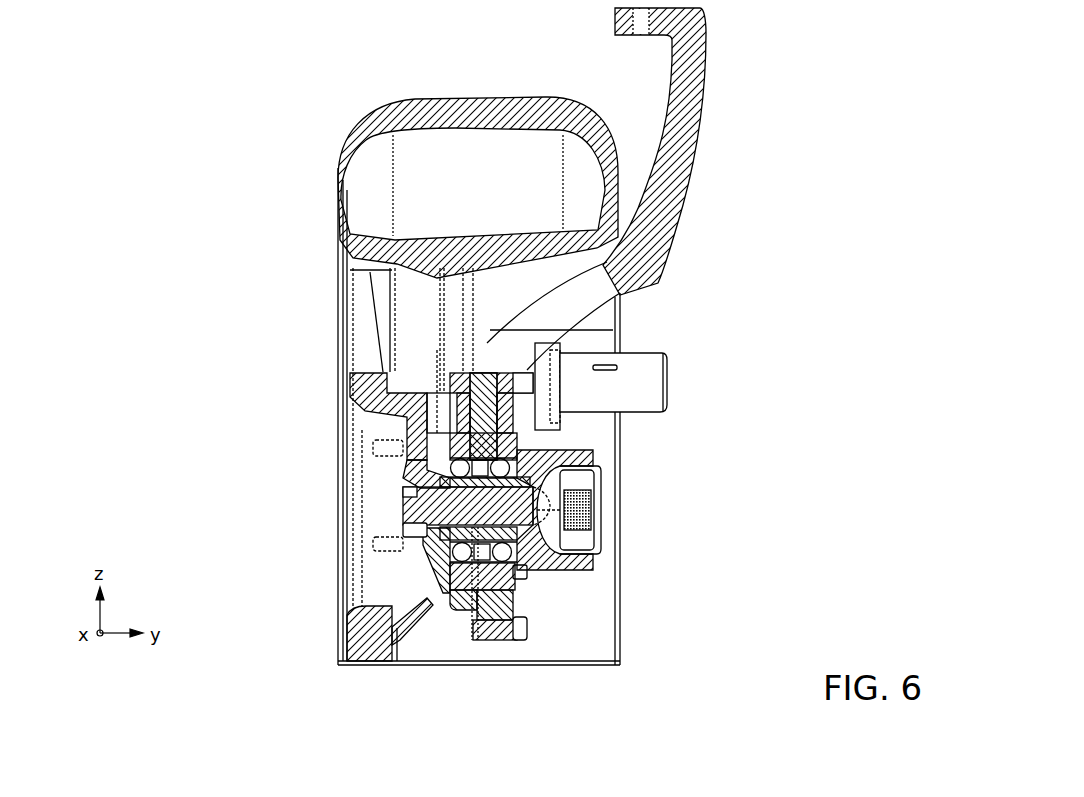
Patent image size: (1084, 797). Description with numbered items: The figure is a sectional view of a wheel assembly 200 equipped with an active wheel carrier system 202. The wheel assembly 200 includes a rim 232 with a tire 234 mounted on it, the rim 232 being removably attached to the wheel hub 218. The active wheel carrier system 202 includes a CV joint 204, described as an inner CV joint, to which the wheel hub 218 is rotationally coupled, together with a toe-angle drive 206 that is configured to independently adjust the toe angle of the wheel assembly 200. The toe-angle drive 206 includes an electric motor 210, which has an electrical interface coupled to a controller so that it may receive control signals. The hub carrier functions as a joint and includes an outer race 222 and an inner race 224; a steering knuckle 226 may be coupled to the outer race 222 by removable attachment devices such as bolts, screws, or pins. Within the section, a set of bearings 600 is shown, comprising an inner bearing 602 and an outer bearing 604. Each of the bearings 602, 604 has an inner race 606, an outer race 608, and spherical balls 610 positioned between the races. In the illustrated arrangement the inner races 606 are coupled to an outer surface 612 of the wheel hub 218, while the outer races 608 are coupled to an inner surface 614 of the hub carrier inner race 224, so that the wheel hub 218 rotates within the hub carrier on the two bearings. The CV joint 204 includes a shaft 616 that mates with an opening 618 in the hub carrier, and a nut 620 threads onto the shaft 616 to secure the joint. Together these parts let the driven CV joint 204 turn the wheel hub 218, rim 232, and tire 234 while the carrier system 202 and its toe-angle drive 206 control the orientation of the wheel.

The wheel assembly 200 is at (240, 97).
The active wheel carrier system 202 is at (568, 588).
The CV joint 204 is at (605, 516).
The toe-angle drive 206 is at (683, 380).
The electric motor 210 is at (633, 367).
The wheel hub 218 is at (393, 474).
The outer race 222 is at (515, 417).
The inner race 224 is at (517, 570).
The steering knuckle 226 is at (703, 203).
The rim 232 is at (337, 633).
The tire 234 is at (352, 110).
The set of bearings 600 is at (520, 468).
The inner bearing 602 is at (500, 625).
The outer bearing 604 is at (450, 573).
The inner race 606 is at (527, 478).
The outer race 608 is at (497, 455).
The spherical balls 610 is at (524, 463).
The outer surface 612 is at (500, 578).
The inner surface 614 is at (473, 460).
The shaft 616 is at (403, 500).
The opening 618 is at (430, 482).
The nut 620 is at (427, 527).